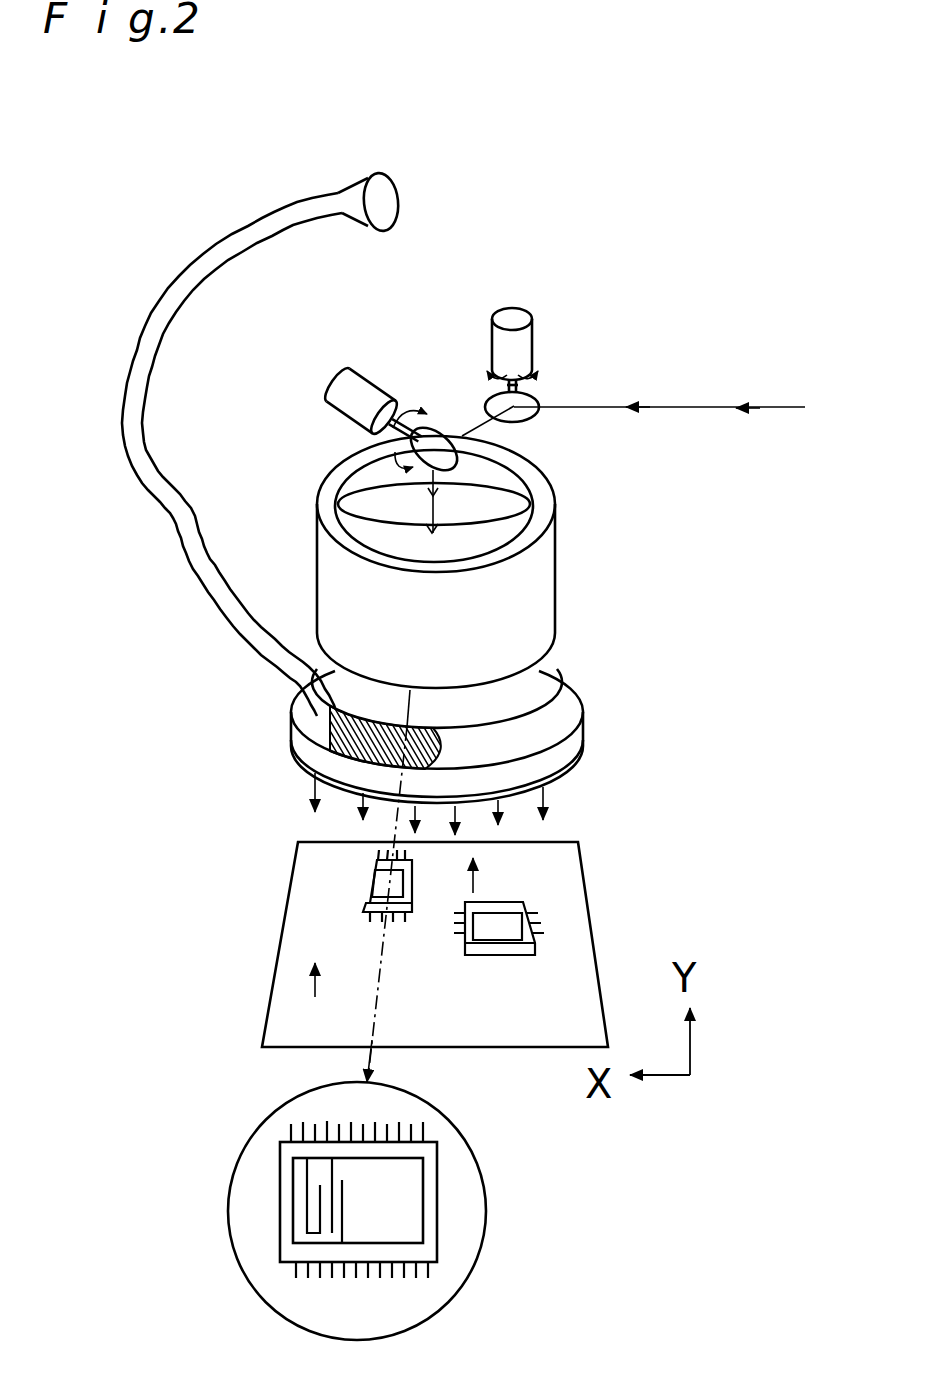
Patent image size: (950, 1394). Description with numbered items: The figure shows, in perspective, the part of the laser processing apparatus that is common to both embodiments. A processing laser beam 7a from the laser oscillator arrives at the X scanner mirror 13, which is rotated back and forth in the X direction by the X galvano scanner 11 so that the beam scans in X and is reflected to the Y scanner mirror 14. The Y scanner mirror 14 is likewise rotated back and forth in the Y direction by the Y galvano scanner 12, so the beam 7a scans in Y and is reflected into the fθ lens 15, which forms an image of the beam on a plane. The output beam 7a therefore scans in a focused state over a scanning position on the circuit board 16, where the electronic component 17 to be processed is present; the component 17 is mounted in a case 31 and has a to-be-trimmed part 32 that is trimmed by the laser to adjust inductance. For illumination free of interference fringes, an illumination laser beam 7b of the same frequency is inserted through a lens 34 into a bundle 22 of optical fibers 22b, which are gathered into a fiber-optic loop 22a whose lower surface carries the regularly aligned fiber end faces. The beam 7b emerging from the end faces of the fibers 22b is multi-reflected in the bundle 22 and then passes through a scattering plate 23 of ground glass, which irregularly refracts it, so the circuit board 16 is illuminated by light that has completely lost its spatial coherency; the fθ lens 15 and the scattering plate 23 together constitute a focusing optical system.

The laser output beam (processing laser beam) 7a is at (736, 408).
The laser output beam (illumination laser beam) 7b is at (412, 198).
The X galvano scanner 11 is at (498, 307).
The Y galvano scanner 12 is at (360, 376).
The X scanner mirror 13 is at (537, 400).
The Y scanner mirror 14 is at (438, 428).
The fθ lens 15 is at (557, 583).
The circuit board 16 is at (603, 932).
The electronic component 17 is at (363, 888).
The bundle of optical fibers 22 is at (133, 342).
The fiber-optic loop 22a is at (560, 690).
The optical fibers 22b is at (297, 738).
The scattering plate 23 is at (582, 735).
The case 31 is at (437, 1243).
The to-be-trimmed part 32 is at (403, 1183).
The lens 34 is at (400, 190).